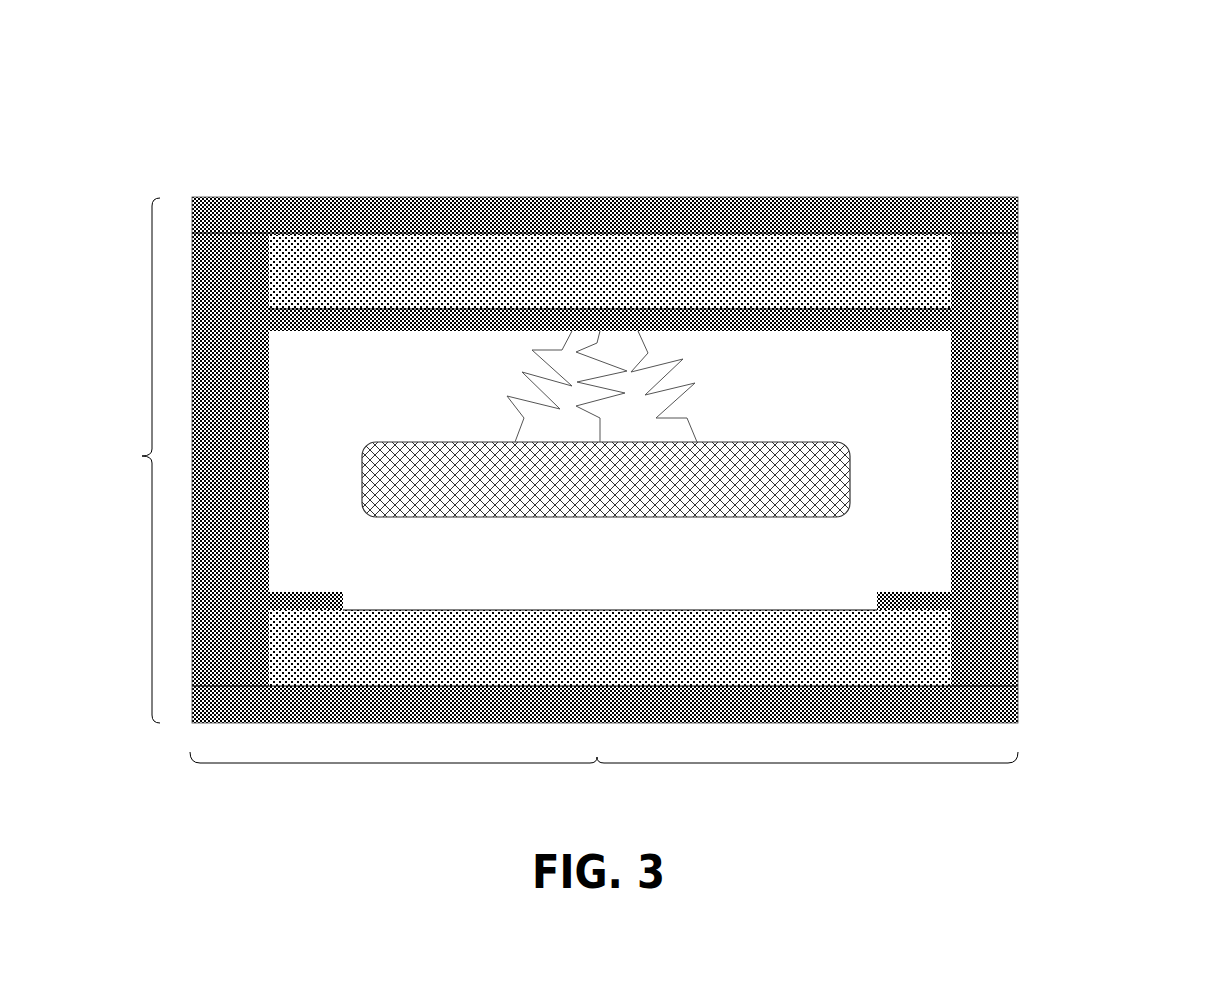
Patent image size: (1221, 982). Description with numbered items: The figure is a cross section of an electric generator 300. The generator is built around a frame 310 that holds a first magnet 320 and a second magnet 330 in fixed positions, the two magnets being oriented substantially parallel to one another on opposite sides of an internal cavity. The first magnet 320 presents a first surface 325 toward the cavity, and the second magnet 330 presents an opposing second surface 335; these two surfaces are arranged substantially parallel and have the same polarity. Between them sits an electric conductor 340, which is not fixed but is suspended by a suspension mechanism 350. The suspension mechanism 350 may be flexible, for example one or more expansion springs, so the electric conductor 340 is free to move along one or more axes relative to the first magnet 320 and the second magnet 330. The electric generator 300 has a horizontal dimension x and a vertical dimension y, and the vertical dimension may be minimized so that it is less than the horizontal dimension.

The electric generator 300 is at (621, 422).
The frame 310 is at (238, 220).
The first magnet 320 is at (610, 271).
The first surface 325 is at (763, 310).
The second magnet 330 is at (610, 648).
The second surface 335 is at (761, 610).
The electric conductor 340 is at (606, 479).
The suspension mechanism 350 is at (692, 427).